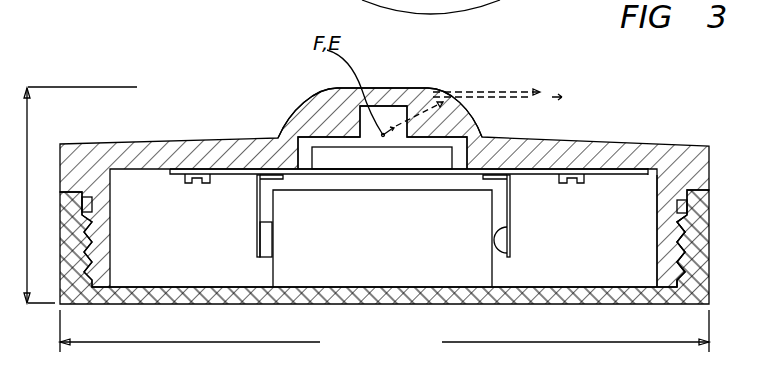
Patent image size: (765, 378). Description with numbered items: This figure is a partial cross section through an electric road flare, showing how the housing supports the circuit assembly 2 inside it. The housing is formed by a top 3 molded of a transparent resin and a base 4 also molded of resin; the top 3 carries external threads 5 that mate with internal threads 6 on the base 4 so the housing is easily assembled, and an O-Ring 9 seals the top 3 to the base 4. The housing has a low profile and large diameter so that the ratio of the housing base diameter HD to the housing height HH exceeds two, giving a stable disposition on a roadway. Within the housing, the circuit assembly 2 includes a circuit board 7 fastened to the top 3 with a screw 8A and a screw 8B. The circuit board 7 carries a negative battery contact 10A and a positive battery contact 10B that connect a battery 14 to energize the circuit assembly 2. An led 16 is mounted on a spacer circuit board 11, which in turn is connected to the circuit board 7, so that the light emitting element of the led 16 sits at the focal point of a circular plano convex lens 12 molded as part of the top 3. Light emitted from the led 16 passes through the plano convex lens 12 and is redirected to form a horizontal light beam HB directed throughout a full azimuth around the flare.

The circuit assembly 2 is at (185, 173).
The top 3 is at (672, 162).
The base 4 is at (695, 300).
The external threads 5 is at (680, 250).
The internal threads 6 is at (683, 255).
The circuit board 7 is at (237, 172).
The screw 8A is at (185, 183).
The screw 8B is at (584, 183).
The O-Ring 9 is at (713, 208).
The negative battery contact 10A is at (508, 217).
The positive battery contact 10B is at (257, 215).
The spacer circuit board 11 is at (323, 157).
The circular plano convex lens 12 is at (327, 98).
The battery 14 is at (459, 268).
The led 16 is at (363, 143).
The horizontal light beam HB is at (490, 92).
The housing height HH is at (74, 195).
The housing base diameter HD is at (384, 334).